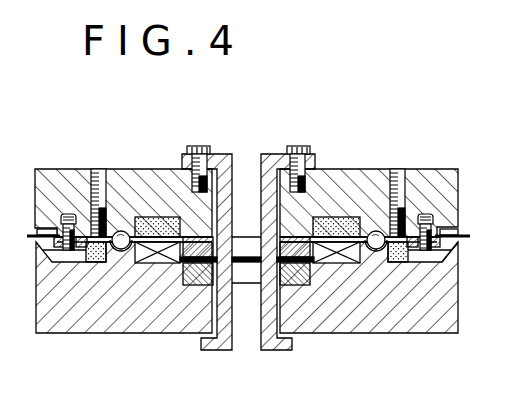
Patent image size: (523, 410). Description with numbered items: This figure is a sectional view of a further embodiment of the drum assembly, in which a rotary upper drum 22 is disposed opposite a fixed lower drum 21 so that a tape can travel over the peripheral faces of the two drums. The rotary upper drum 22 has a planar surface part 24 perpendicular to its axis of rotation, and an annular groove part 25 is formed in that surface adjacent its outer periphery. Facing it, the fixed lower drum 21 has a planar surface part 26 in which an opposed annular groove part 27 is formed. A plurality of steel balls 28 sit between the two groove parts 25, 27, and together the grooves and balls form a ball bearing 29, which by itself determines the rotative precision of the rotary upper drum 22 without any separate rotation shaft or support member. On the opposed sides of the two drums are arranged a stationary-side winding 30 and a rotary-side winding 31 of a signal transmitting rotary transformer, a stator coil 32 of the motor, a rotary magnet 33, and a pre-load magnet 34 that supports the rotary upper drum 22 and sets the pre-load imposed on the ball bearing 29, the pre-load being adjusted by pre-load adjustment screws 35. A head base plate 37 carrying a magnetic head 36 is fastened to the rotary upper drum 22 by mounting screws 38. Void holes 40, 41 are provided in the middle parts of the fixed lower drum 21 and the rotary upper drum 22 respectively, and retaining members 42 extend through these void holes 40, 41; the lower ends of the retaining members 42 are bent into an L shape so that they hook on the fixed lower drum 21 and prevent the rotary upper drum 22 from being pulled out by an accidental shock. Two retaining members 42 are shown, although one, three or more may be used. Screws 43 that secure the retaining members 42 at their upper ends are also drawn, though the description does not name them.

The fixed lower drum 21 is at (428, 315).
The rotary upper drum 22 is at (428, 180).
The planar surface part 24 is at (113, 232).
The annular groove part 25 is at (121, 236).
The planar surface part 26 is at (110, 257).
The annular groove part 27 is at (128, 251).
The steel balls 28 is at (126, 233).
The ball bearing 29 is at (378, 252).
The stationary-side winding 30 is at (197, 286).
The rotary-side winding 31 is at (170, 264).
The stator coil 32 is at (338, 264).
The rotary magnet 33 is at (340, 218).
The pre-load magnet 34 is at (96, 262).
The pre-load adjustment screws 35 is at (393, 176).
The magnetic head 36 is at (458, 232).
The head base plate 37 is at (462, 237).
The mounting screws 38 is at (452, 252).
The void hole 40 is at (248, 325).
The void hole 41 is at (240, 166).
The retaining members 42 is at (266, 153).
The screw 43 is at (293, 147).